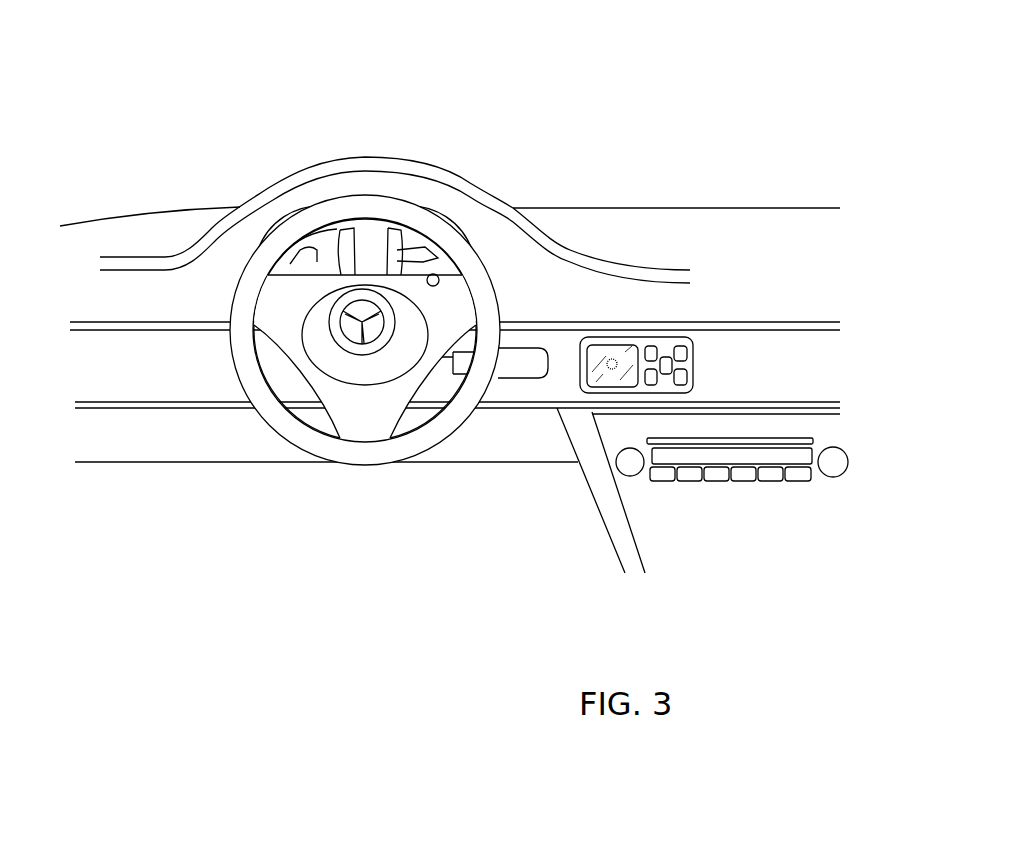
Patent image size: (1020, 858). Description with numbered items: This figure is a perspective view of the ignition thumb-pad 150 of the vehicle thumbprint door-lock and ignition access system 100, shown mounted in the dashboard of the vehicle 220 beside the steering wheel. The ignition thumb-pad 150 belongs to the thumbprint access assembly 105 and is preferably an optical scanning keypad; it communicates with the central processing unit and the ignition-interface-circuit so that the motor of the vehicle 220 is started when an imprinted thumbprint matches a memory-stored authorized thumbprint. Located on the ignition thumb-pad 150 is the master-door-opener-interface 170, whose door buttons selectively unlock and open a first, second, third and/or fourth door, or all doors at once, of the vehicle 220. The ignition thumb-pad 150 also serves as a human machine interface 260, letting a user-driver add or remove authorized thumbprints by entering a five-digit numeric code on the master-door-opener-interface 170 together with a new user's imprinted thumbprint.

The vehicle thumbprint door-lock and ignition access system 100 is at (692, 52).
The thumbprint access assembly 105 is at (706, 96).
The ignition thumb-pad 150 is at (620, 352).
The master-door-opener-interface 170 is at (678, 275).
The vehicle 220 is at (200, 205).
The human machine interface 260 is at (698, 373).